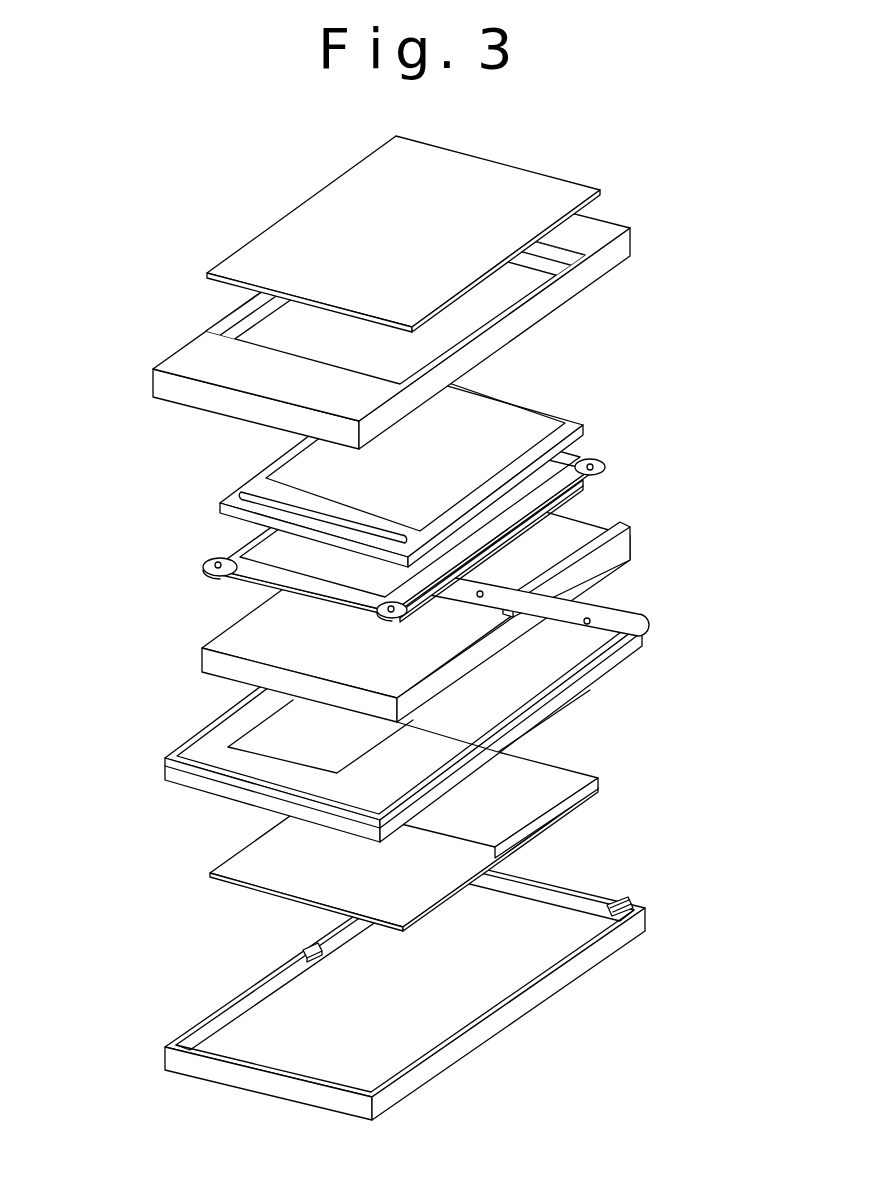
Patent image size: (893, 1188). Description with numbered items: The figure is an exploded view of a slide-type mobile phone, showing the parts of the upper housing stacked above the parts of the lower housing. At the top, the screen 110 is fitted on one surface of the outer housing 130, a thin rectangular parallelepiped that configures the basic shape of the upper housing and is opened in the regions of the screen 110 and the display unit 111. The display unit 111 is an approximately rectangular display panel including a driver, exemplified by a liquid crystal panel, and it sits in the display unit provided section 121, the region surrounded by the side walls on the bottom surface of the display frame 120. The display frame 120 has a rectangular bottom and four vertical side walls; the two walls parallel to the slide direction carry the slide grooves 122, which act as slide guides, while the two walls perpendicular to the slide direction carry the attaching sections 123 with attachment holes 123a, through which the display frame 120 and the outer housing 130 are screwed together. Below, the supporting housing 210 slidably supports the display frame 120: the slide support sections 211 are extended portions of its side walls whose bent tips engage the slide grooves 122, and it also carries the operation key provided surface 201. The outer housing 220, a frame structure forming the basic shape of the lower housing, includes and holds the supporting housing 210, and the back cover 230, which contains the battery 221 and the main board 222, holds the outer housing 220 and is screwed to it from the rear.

The screen 110 is at (310, 212).
The outer housing 130 is at (190, 352).
The display unit 111 is at (505, 435).
The display frame 120 is at (477, 466).
The attaching sections 123 is at (477, 510).
The attachment holes 123a is at (600, 465).
The slide grooves 122 is at (588, 488).
The display unit provided section 121 is at (470, 543).
The supporting housing 210 is at (442, 601).
The slide support section 211 is at (622, 548).
The operation key provided surface 201 is at (407, 672).
The outer housing 220 is at (200, 748).
The battery 221 is at (593, 790).
The main board 222 is at (222, 873).
The back cover 230 is at (170, 1056).